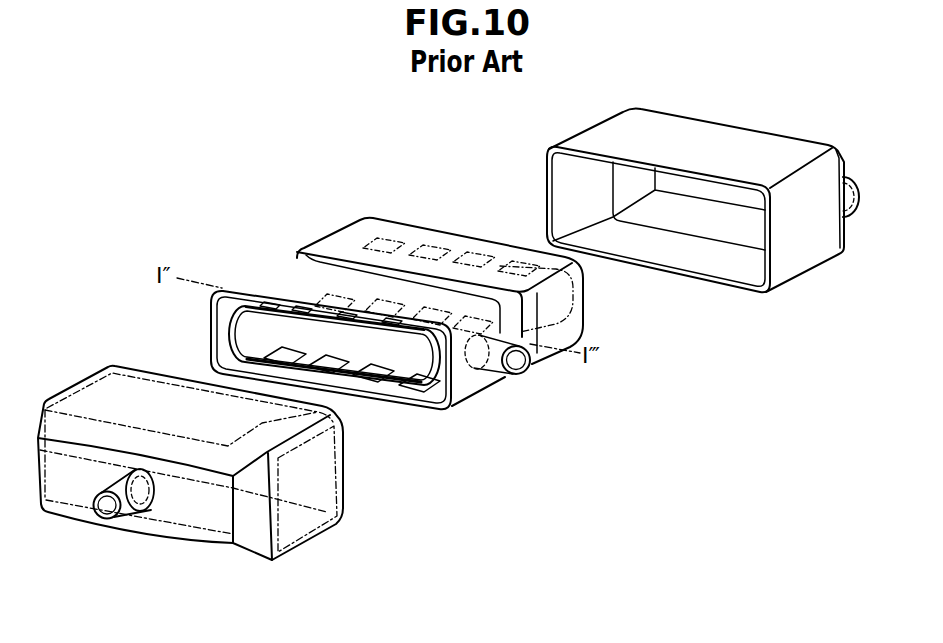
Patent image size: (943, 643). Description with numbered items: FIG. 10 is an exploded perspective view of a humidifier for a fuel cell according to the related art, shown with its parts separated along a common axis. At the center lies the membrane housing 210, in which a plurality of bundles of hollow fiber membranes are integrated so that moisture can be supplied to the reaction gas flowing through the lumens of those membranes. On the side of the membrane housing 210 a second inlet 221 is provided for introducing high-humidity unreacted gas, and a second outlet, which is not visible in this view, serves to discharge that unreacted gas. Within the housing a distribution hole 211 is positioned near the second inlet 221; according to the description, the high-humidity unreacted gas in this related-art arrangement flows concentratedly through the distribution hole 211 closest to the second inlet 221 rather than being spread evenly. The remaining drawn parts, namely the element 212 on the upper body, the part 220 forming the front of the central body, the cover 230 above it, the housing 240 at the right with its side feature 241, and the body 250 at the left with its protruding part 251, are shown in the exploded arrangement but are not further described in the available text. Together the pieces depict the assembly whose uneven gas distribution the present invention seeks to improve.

The membrane housing 210 is at (229, 331).
The distribution hole 211 is at (423, 386).
The upper contacts 212 is at (388, 248).
The metal shell 220 is at (272, 272).
The second inlet 221 is at (517, 360).
The insulative cover 230 is at (348, 226).
The outer housing 240 is at (678, 127).
The housing latch knob 241 is at (858, 193).
The plug body 250 is at (92, 394).
The plug post 251 is at (105, 506).